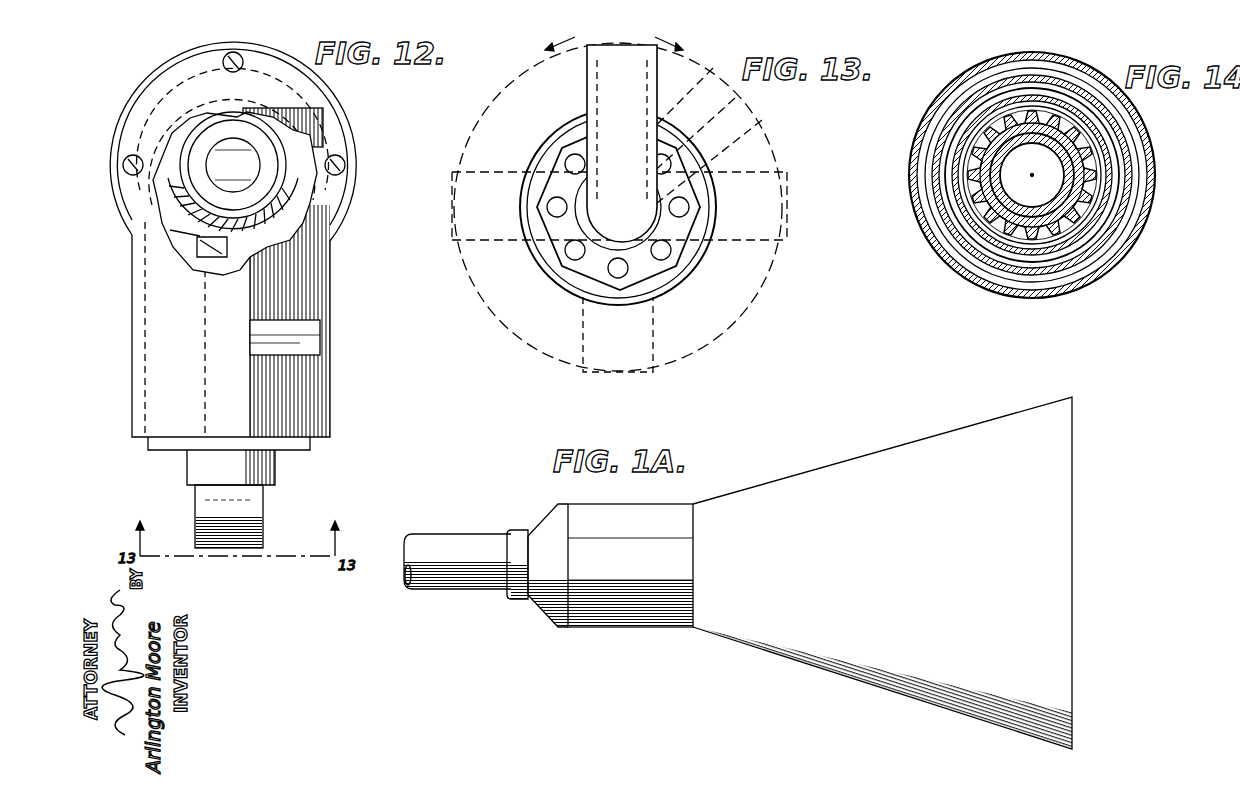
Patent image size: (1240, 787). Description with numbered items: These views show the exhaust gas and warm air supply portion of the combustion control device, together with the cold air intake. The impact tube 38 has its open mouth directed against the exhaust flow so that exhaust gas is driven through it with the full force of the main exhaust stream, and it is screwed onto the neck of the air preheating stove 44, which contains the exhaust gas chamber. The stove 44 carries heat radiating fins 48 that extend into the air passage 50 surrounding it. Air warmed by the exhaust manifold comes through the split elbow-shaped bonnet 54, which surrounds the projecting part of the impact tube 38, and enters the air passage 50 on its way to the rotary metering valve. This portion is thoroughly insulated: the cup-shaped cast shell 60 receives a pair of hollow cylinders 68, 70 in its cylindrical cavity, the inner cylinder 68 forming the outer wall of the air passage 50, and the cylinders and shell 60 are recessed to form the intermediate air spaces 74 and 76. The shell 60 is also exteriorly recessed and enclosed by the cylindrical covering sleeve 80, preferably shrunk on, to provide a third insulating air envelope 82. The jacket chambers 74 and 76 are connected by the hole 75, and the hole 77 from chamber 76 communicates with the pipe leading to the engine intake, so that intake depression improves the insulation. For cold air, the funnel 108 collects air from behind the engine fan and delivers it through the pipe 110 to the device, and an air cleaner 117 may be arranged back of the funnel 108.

In FIG. 12, the impact tube 38 is at (265, 510).
In FIG. 13, the impact tube 38 is at (600, 83).
In FIG. 14, the air preheating stove 44 is at (1030, 166).
In FIG. 12, the heat radiating fins 48 is at (300, 197).
In FIG. 14, the heat radiating fins 48 is at (1090, 157).
In FIG. 14, the air passage 50 is at (1085, 134).
In FIG. 12, the split elbow-shaped bonnet 54 is at (322, 353).
In FIG. 13, the split elbow-shaped bonnet 54 is at (718, 220).
In FIG. 14, the cast shell 60 is at (1112, 210).
In FIG. 14, the inner hollow cylinder 68 is at (1100, 225).
In FIG. 14, the outer hollow cylinder 70 is at (1118, 222).
In FIG. 14, the intermediate air space 74 is at (1120, 190).
In FIG. 14, the hole 75 is at (1115, 168).
In FIG. 14, the intermediate air space 76 is at (1128, 197).
In FIG. 14, the hole 77 is at (1122, 176).
In FIG. 14, the cylindrical covering sleeve 80 is at (1083, 287).
In FIG. 14, the third insulating air envelope 82 is at (1103, 267).
In FIG. 1A, the funnel 108 is at (875, 458).
In FIG. 1A, the pipe 110 is at (470, 578).
In FIG. 1A, the air cleaner 117 is at (645, 620).